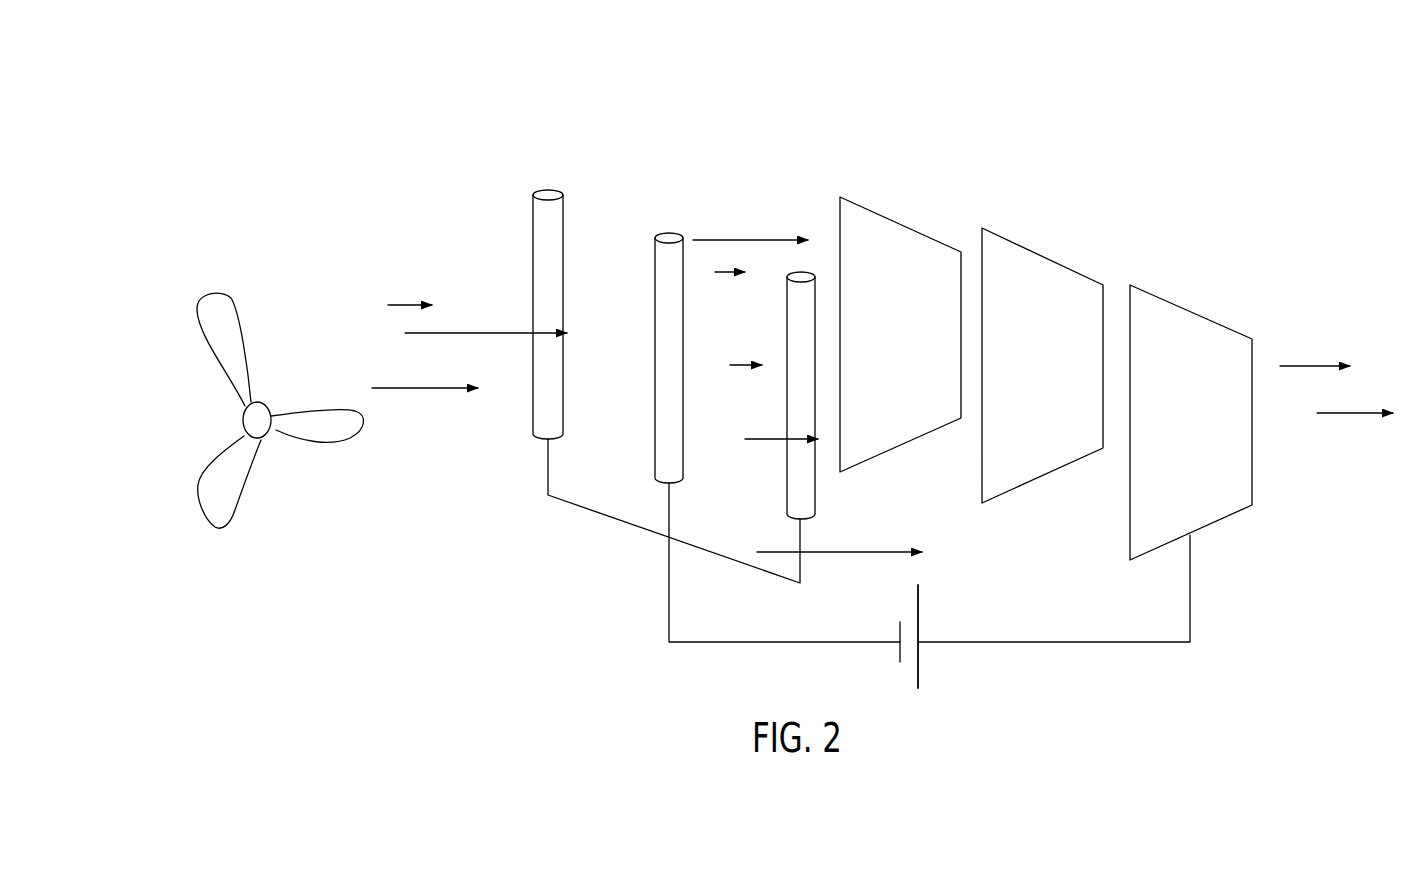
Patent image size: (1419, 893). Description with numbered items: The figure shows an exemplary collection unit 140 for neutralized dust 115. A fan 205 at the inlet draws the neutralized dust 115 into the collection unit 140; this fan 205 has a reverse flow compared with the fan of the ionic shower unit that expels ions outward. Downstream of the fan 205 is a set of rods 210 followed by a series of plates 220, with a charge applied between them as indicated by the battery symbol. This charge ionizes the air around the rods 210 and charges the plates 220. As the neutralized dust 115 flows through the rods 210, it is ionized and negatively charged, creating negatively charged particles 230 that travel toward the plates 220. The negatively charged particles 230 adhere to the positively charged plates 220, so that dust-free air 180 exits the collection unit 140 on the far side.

The fan 205 is at (252, 423).
The neutralized dust 115 is at (430, 310).
The collection unit 140 is at (1062, 107).
The rods 210 is at (512, 222).
The negatively charged particles 230 is at (782, 330).
The plates 220 is at (1196, 291).
The dust-free air 180 is at (1336, 432).